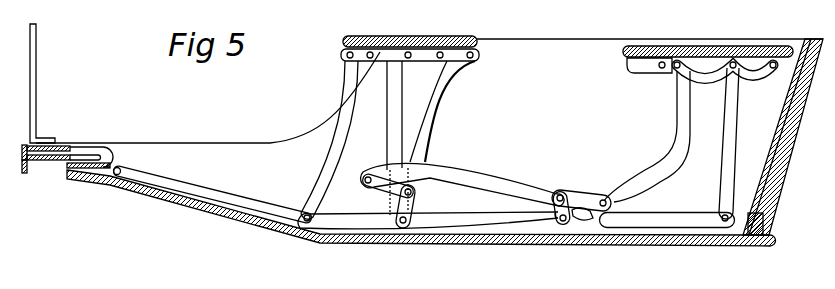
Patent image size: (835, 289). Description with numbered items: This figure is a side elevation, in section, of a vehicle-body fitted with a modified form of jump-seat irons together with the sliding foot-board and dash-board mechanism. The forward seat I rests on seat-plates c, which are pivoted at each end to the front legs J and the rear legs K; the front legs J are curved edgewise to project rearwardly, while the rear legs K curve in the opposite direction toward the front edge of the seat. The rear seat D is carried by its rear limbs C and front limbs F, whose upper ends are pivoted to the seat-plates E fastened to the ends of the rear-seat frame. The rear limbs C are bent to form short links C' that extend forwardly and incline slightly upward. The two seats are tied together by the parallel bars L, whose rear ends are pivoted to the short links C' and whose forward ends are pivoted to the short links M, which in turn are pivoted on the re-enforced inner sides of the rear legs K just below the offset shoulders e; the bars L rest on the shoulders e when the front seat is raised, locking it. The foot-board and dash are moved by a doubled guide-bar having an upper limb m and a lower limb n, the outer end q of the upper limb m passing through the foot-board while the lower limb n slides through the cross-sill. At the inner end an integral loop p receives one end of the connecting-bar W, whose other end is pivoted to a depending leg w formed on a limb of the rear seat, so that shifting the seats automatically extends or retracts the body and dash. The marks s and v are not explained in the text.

The standard post s is at (42, 83).
The outer end of upper limb q is at (22, 150).
The nut v is at (22, 166).
The upper limb of guide-bar m is at (70, 147).
The lower limb of guide-bar n is at (62, 170).
The integral loop or eye p is at (122, 171).
The connecting-bar W is at (213, 194).
The forward seat I is at (441, 35).
The seat-plates c is at (406, 144).
The front legs J is at (329, 141).
The rear legs K is at (426, 131).
The parallel bars L is at (463, 184).
The short links M is at (387, 192).
The offset shoulder e is at (420, 193).
The short links of rear limbs C' is at (581, 200).
The depending integral leg w is at (575, 218).
The rear seat D is at (708, 40).
The seat-plates E is at (661, 73).
The front limbs F is at (687, 141).
The rear limbs C is at (736, 144).